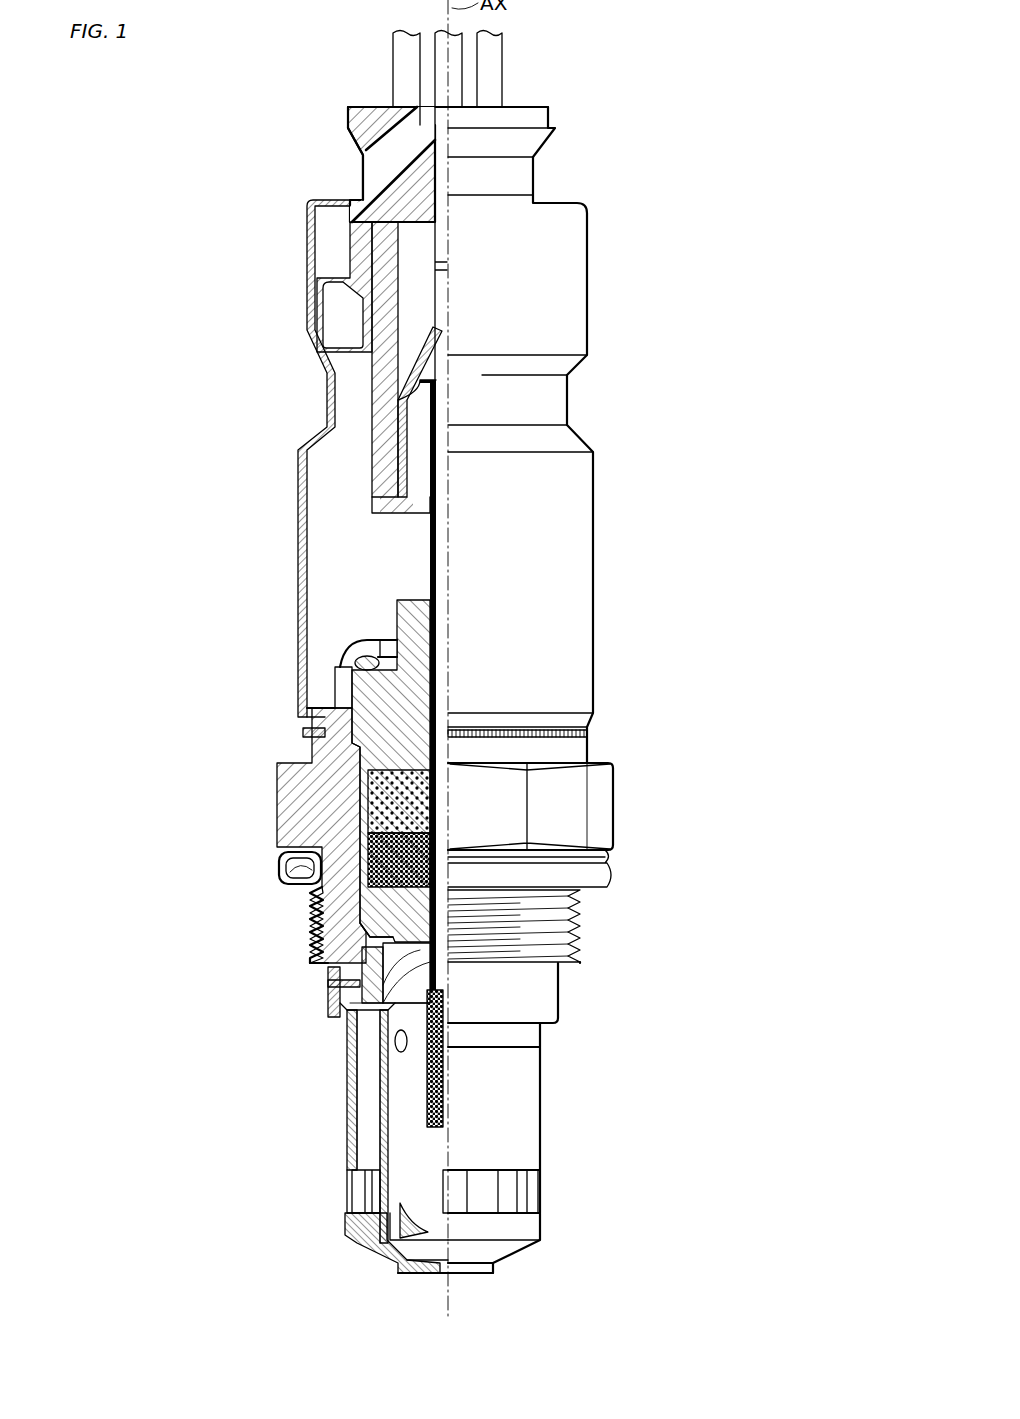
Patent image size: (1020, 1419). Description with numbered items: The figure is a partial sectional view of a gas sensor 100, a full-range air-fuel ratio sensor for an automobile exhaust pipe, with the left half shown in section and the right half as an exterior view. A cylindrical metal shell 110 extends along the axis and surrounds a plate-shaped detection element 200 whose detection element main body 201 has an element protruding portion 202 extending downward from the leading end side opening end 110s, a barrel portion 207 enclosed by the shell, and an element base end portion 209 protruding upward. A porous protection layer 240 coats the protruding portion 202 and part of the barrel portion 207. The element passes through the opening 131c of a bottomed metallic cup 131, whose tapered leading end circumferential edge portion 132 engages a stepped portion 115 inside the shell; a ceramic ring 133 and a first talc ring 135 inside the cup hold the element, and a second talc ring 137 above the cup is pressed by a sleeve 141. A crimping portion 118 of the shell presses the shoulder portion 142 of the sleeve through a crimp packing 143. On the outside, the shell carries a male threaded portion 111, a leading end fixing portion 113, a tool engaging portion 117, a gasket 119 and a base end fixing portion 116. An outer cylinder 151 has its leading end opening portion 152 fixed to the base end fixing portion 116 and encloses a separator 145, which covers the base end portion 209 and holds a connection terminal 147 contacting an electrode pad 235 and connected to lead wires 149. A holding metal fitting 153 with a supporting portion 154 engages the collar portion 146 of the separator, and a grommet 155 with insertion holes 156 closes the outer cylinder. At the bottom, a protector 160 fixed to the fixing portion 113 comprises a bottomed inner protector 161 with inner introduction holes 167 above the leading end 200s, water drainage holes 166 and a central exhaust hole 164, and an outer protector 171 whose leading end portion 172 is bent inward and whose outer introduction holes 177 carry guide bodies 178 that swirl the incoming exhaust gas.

The gas sensor 100 is at (626, 161).
The metal shell 110 is at (614, 772).
The leading end side opening end 110s is at (540, 1050).
The male threaded portion 111 is at (582, 940).
The leading end fixing portion 113 is at (350, 1010).
The stepped portion 115 is at (352, 940).
The base end fixing portion 116 is at (318, 710).
The tool engaging portion 117 is at (614, 808).
The crimping portion 118 is at (352, 645).
The gasket 119 is at (612, 868).
The metallic cup 131 is at (300, 882).
The opening 131c is at (345, 985).
The leading end circumferential edge portion 132 is at (322, 966).
The ceramic ring 133 is at (312, 930).
The first talc ring 135 is at (290, 868).
The second talc ring 137 is at (380, 860).
The sleeve 141 is at (400, 603).
The shoulder portion 142 is at (340, 688).
The crimp packing 143 is at (355, 664).
The separator 145 is at (384, 390).
The collar portion 146 is at (352, 265).
The connection terminal 147 is at (405, 458).
The lead wire 149 is at (395, 73).
The outer cylinder 151 is at (596, 522).
The leading end opening portion 152 is at (305, 735).
The holding metal fitting 153 is at (332, 292).
The supporting portion 154 is at (345, 330).
The grommet 155 is at (365, 118).
The insertion hole 156 is at (345, 165).
The protector 160 is at (653, 1195).
The inner protector 161 is at (492, 1270).
The exhaust hole 164 is at (437, 1275).
The water drainage hole 166 is at (410, 1243).
The inner introduction hole 167 is at (348, 1088).
The outer protector 171 is at (543, 1227).
The leading end portion 172 is at (348, 1250).
The outer introduction hole 177 is at (548, 1188).
The guide body 178 is at (340, 1200).
The detection element 200 is at (343, 1057).
The leading end 200s is at (343, 1200).
The detection element main body 201 is at (343, 1025).
The element protruding portion 202 is at (395, 1160).
The barrel portion 207 is at (380, 800).
The element base end portion 209 is at (390, 410).
The electrode pad 235 is at (430, 492).
The porous protection layer 240 is at (430, 1110).